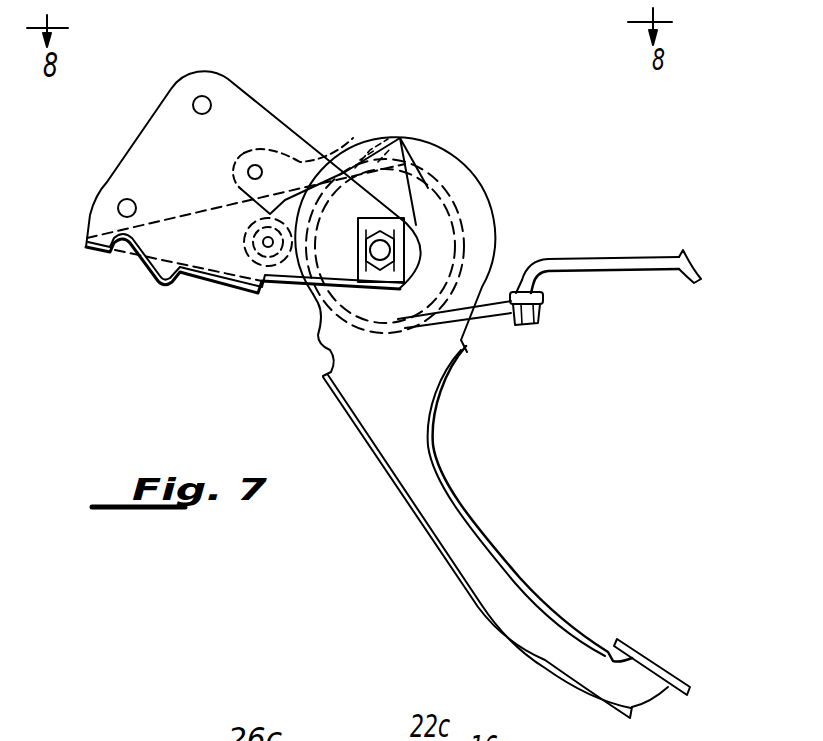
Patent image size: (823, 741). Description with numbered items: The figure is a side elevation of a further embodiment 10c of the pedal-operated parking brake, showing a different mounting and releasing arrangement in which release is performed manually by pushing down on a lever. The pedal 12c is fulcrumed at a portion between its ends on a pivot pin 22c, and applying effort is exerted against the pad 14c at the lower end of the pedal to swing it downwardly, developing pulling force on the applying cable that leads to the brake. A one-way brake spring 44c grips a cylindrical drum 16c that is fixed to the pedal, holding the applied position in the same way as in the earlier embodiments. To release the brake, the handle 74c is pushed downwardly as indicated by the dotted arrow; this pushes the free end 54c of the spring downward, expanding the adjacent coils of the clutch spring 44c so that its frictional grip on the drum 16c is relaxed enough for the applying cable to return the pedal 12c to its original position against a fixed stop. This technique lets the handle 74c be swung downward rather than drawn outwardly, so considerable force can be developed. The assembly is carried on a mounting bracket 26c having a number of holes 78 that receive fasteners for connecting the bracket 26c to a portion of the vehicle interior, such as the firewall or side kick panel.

The embodiment 10c is at (390, 492).
The pedal 12c is at (487, 545).
The pad 14c is at (640, 660).
The cylindrical drum 16c is at (428, 188).
The pivot pin 22c is at (390, 243).
The mounting bracket 26c is at (254, 101).
The one-way brake spring 44c is at (462, 230).
The free end of the spring 54c is at (543, 304).
The handle 74c is at (682, 324).
The holes 78 is at (195, 108).